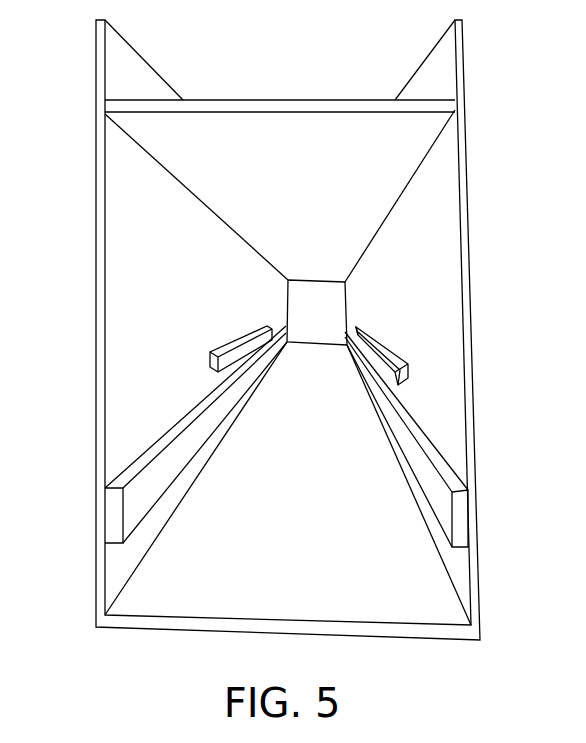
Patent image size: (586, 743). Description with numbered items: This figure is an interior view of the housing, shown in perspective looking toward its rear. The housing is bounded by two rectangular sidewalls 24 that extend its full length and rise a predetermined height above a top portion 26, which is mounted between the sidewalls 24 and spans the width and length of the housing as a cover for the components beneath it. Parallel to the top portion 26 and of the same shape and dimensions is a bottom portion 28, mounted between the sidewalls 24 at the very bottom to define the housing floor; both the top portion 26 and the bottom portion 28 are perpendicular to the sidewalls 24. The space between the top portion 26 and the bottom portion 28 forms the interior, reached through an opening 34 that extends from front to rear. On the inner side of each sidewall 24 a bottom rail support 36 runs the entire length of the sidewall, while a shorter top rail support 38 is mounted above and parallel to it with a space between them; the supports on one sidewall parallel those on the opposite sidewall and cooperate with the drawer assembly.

The sidewalls 24 is at (120, 272).
The top portion 26 is at (300, 138).
The bottom portion 28 is at (183, 582).
The opening 34 is at (360, 313).
The bottom rail support 36 is at (163, 472).
The top rail support 38 is at (233, 352).